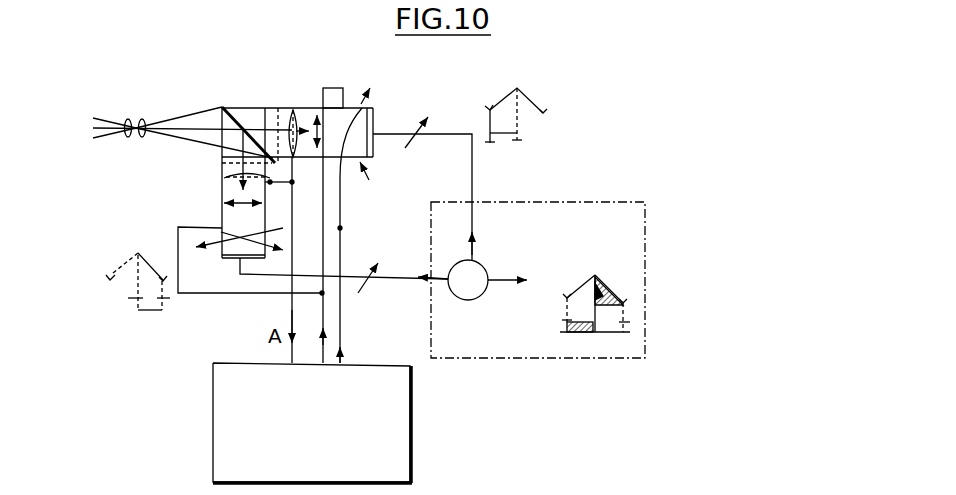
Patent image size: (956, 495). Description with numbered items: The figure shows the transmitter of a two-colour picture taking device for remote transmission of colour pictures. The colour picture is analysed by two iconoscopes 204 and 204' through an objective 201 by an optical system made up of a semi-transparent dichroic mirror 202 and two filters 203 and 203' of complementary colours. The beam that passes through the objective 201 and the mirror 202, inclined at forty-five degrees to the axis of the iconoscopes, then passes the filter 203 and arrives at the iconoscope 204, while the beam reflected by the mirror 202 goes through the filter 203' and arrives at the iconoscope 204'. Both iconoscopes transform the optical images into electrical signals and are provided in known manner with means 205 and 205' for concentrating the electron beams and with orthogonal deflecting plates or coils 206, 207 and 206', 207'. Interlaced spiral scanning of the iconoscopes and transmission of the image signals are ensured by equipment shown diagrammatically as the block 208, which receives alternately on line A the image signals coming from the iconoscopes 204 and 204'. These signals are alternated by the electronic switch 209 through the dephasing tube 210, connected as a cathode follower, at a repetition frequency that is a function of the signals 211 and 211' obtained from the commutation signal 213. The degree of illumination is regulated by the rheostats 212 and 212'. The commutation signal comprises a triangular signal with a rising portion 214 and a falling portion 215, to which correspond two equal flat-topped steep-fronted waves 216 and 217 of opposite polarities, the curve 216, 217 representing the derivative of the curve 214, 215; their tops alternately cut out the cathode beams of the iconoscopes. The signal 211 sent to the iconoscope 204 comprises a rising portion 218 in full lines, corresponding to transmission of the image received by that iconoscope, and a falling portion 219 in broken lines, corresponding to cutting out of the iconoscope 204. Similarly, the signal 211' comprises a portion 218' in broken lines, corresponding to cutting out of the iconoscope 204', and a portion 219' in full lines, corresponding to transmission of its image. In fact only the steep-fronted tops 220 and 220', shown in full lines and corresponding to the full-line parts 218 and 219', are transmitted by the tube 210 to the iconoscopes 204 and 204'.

The objective 201 is at (129, 119).
The semi-transparent dichroic mirror 202 is at (233, 118).
The filter 203 is at (301, 98).
The iconoscope 204 is at (313, 108).
The means for concentration of the electron beam 205 is at (357, 203).
The deflecting plates or coils 206 is at (389, 212).
The deflecting plates or coils 207 is at (393, 181).
The filter 203' is at (196, 173).
The iconoscope 204' is at (174, 167).
The means for concentration of the electron beam 205' is at (317, 260).
The deflecting plates or coils 206' is at (313, 261).
The deflecting plates or coils 207' is at (351, 234).
The rheostat 212 is at (422, 188).
The rheostat 212' is at (383, 298).
The equipment block 208 is at (382, 435).
The electronic switch 209 is at (607, 218).
The dephasing tube 210 is at (467, 288).
The commutation signal 213 is at (622, 285).
The rising portion of triangular signal 214 is at (580, 290).
The falling portion of triangular signal 215 is at (603, 286).
The flat-topped steep-fronted wave 216 is at (578, 333).
The flat-topped steep-fronted wave 217 is at (608, 331).
The rising portion of signal 211 218 is at (502, 95).
The signal 211 is at (537, 87).
The falling portion of signal 211 219 is at (586, 82).
The steep-fronted top 220 is at (542, 156).
The rising portion of signal 211' 218' is at (100, 257).
The signal 211' is at (129, 314).
The rising portion of signal 211' 219' is at (150, 249).
The steep-fronted top 220' is at (164, 347).